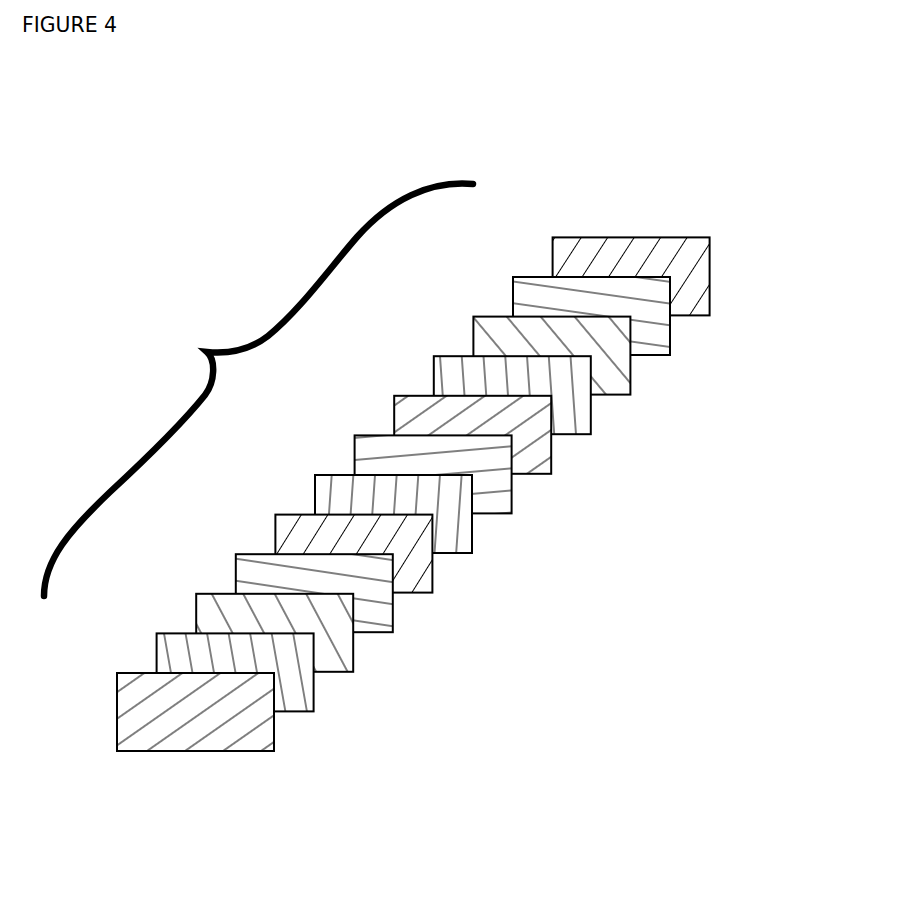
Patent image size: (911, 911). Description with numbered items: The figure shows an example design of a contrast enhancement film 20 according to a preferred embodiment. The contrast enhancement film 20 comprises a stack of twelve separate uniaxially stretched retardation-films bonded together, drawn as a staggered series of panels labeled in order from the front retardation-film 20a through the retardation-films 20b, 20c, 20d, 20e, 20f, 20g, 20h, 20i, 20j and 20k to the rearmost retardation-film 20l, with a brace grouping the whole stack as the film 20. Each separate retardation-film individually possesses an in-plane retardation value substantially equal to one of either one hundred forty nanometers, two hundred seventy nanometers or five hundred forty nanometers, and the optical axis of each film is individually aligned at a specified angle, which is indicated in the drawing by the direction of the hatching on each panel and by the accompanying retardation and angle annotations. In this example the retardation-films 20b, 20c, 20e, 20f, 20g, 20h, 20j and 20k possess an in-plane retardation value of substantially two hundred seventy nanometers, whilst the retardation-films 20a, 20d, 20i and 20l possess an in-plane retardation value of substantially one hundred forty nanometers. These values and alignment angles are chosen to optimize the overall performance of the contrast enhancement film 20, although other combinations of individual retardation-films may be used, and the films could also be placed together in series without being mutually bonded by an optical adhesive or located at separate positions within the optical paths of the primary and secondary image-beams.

The contrast enhancement film 20 is at (258, 389).
The retardation-film 20a is at (217, 689).
The retardation-film 20b is at (255, 649).
The retardation-film 20c is at (294, 610).
The retardation-film 20d is at (334, 570).
The retardation-film 20e is at (375, 531).
The retardation-film 20f is at (415, 491).
The retardation-film 20g is at (452, 451).
The retardation-film 20h is at (494, 412).
The retardation-film 20i is at (532, 372).
The retardation-film 20j is at (571, 333).
The retardation-film 20k is at (611, 293).
The retardation-film 20l is at (653, 253).